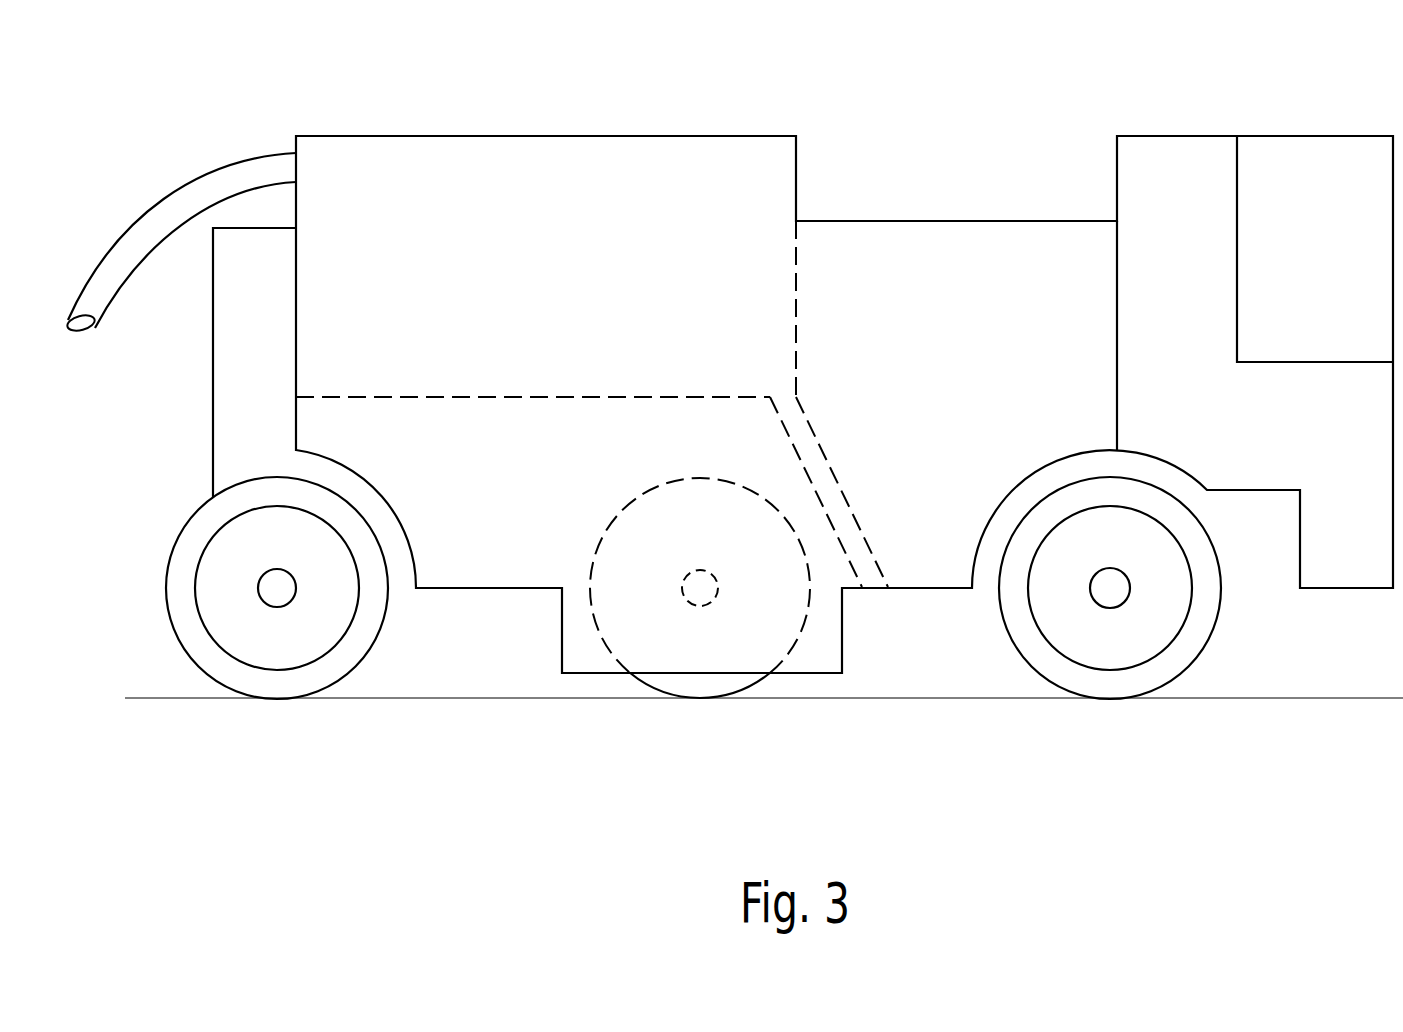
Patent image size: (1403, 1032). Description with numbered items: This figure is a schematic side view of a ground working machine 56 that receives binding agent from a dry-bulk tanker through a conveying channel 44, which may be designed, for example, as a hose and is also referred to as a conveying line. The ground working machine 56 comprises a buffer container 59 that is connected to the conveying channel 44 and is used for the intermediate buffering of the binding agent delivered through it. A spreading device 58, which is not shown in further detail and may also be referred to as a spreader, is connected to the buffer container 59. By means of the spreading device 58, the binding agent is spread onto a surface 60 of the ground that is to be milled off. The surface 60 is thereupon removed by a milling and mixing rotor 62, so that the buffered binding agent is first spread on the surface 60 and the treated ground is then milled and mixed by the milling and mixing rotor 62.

The conveying channel 44 is at (150, 215).
The ground working machine 56 is at (896, 113).
The spreading device 58 is at (902, 556).
The buffer container 59 is at (558, 273).
The surface 60 is at (910, 700).
The milling and mixing rotor 62 is at (703, 687).